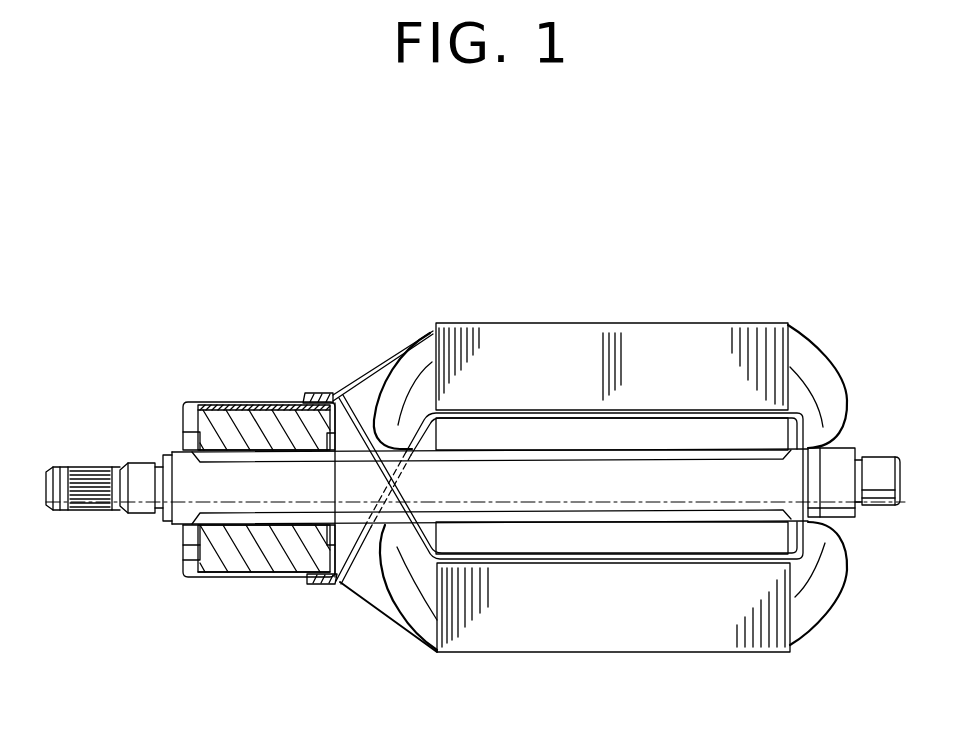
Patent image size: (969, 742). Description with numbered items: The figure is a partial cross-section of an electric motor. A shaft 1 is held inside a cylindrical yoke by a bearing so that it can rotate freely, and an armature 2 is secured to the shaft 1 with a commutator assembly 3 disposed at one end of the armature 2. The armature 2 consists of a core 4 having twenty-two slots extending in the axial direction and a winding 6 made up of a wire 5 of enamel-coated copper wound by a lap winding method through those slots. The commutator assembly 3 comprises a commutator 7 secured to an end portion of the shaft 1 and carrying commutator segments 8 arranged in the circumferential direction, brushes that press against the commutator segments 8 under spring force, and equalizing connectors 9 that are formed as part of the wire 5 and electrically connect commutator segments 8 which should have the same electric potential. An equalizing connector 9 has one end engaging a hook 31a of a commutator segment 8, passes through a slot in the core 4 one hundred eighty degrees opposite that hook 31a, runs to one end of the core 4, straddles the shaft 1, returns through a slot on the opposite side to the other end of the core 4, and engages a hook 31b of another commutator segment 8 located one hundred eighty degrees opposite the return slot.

The shaft 1 is at (720, 517).
The armature 2 is at (610, 453).
The commutator assembly 3 is at (257, 462).
The core 4 is at (585, 355).
The wire 5 is at (380, 366).
The winding 6 is at (422, 378).
The commutator 7 is at (228, 578).
The commutator segment 8 is at (207, 400).
The equalizing connector 9 is at (503, 567).
The hook 31a is at (310, 392).
The hook 31b is at (318, 588).